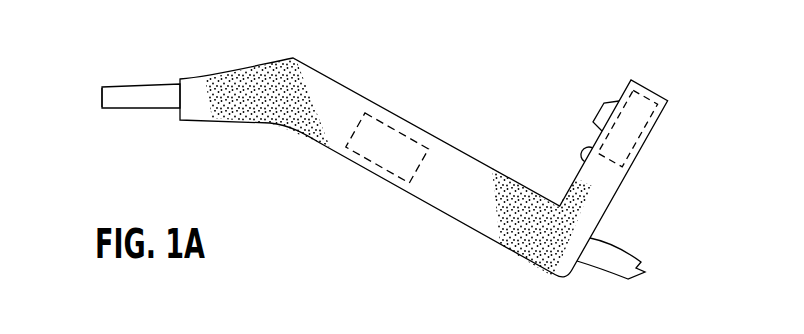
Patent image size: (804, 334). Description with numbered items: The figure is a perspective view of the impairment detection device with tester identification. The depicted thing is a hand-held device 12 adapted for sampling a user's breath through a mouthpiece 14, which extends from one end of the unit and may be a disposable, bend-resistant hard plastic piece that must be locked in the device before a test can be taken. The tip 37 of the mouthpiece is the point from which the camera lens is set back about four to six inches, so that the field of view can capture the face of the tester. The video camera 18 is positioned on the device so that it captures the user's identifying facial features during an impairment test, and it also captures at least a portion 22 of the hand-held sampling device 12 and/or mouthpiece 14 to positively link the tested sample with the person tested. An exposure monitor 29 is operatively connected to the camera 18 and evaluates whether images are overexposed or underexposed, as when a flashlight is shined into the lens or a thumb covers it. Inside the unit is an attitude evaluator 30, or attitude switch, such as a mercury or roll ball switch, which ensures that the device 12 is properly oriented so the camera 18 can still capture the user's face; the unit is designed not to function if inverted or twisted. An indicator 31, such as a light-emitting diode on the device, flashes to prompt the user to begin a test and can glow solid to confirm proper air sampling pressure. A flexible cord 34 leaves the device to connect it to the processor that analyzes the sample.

The hand-held device 12 is at (296, 175).
The mouthpiece 14 is at (128, 87).
The video camera 18 is at (613, 104).
The portion of the hand-held sampling device 22 is at (293, 58).
The exposure monitor 29 is at (660, 87).
The attitude evaluator 30 is at (418, 171).
The indicator 31 is at (578, 153).
The flexible cord 34 is at (613, 251).
The tip of the mouthpiece 37 is at (102, 96).